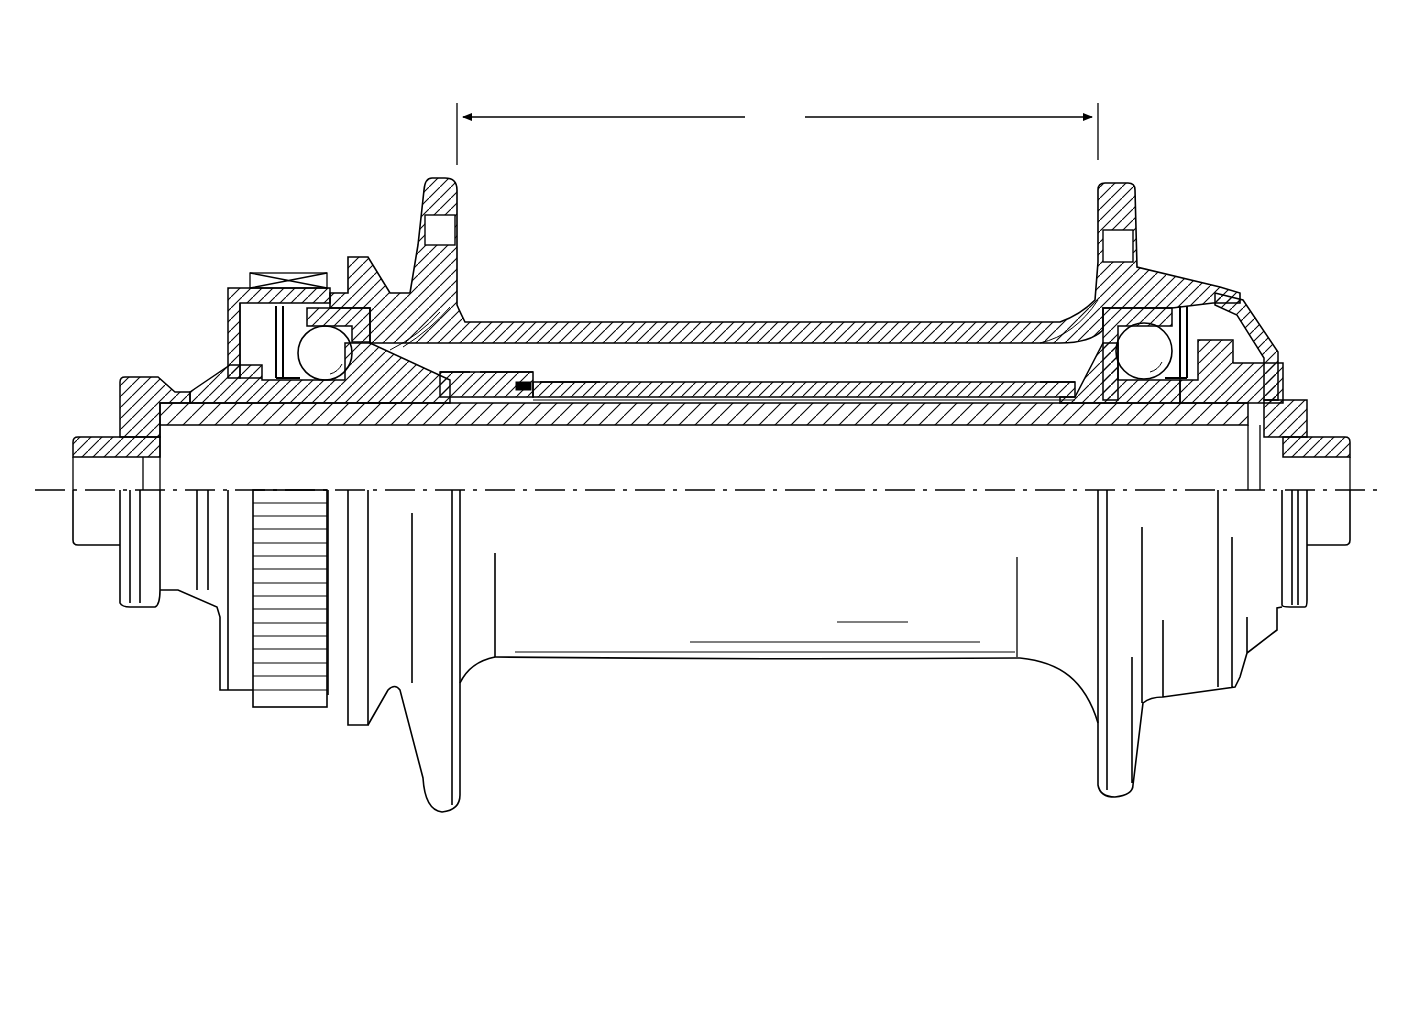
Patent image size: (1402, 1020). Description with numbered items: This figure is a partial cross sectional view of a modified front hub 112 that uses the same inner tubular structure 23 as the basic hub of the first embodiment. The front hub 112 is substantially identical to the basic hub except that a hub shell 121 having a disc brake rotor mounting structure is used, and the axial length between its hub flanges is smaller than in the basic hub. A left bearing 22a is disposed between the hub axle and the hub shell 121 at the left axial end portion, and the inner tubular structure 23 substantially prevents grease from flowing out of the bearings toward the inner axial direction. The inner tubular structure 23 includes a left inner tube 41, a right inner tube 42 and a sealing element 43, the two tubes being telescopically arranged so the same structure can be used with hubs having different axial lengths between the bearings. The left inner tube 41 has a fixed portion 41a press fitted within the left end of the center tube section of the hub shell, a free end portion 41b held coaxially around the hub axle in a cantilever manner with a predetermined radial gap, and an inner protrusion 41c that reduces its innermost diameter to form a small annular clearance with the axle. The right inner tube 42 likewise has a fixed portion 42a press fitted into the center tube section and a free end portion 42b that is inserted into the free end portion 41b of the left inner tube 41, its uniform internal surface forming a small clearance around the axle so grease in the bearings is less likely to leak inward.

The front hub 112 is at (982, 82).
The hub shell 121 is at (783, 320).
The left bearing 22a is at (262, 329).
The inner tubular structure 23 is at (627, 230).
The left inner tube 41 is at (464, 368).
The fixed portion 41a is at (475, 370).
The free end portion 41b is at (503, 372).
The inner protrusion 41c is at (378, 427).
The right inner tube 42 is at (617, 380).
The fixed portion 42a is at (1060, 362).
The free end portion 42b is at (577, 382).
The sealing element 43 is at (523, 393).